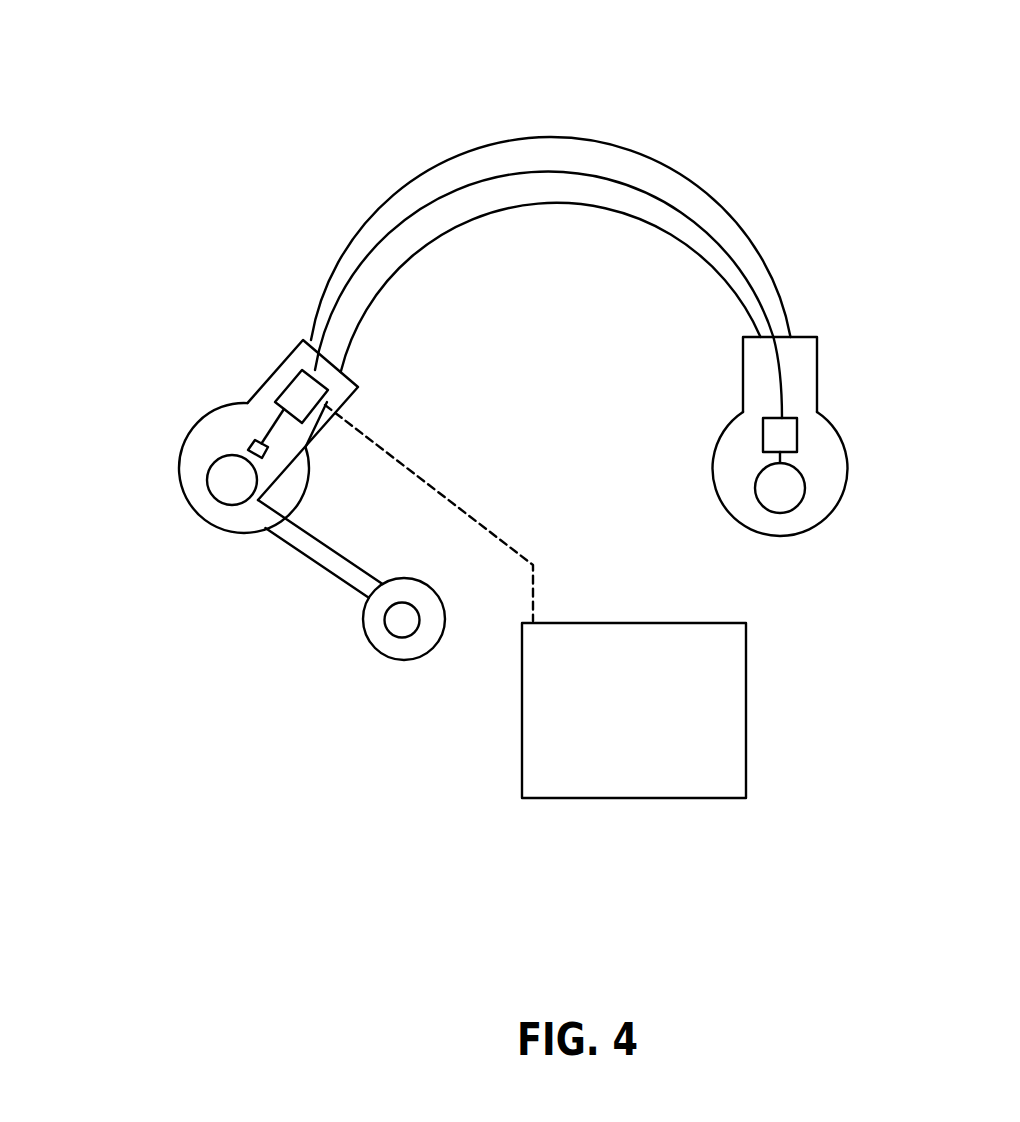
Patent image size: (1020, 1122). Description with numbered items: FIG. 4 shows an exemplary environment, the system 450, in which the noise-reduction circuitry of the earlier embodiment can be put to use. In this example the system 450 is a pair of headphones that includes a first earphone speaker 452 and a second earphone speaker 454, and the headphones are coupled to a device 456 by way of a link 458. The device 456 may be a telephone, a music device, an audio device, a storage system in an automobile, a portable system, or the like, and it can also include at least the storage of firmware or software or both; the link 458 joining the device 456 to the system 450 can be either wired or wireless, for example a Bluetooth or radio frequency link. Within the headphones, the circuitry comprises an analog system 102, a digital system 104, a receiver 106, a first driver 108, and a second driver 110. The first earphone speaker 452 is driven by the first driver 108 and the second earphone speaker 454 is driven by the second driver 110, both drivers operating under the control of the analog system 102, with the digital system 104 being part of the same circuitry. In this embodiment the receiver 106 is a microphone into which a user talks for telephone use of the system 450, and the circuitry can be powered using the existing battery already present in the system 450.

The system 450 is at (782, 109).
The analog system 102 is at (268, 362).
The digital system 104 is at (302, 392).
The first driver 108 is at (250, 442).
The first earphone speaker 452 is at (223, 490).
The receiver 106 is at (402, 627).
The link 458 is at (446, 498).
The device 456 is at (747, 708).
The second driver 110 is at (787, 435).
The second earphone speaker 454 is at (787, 500).